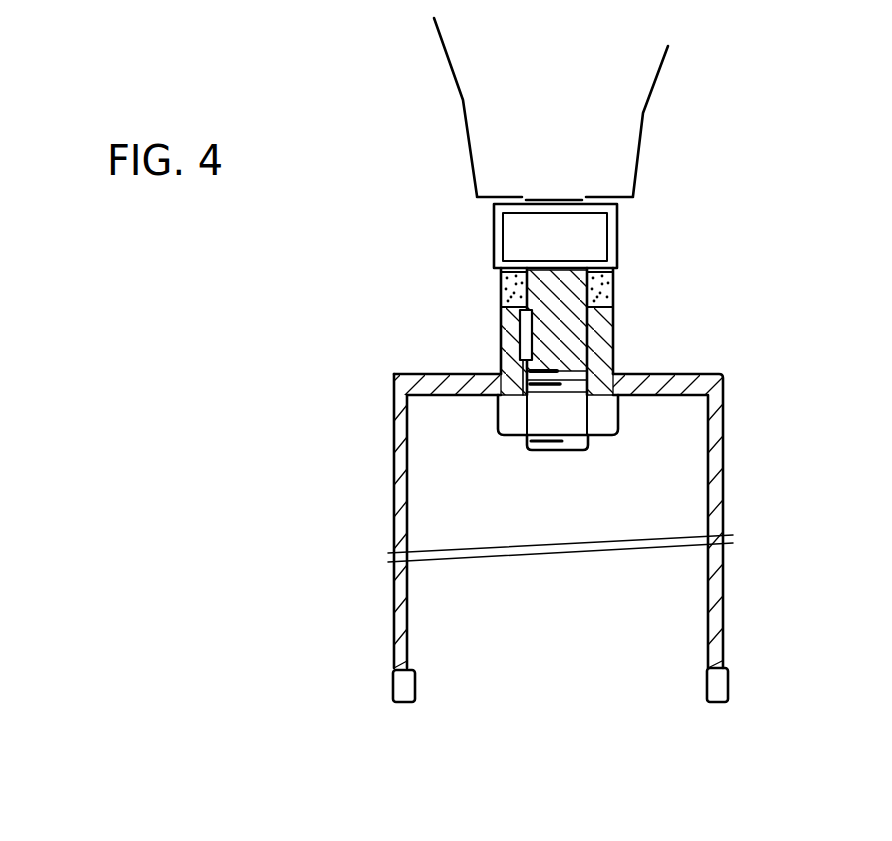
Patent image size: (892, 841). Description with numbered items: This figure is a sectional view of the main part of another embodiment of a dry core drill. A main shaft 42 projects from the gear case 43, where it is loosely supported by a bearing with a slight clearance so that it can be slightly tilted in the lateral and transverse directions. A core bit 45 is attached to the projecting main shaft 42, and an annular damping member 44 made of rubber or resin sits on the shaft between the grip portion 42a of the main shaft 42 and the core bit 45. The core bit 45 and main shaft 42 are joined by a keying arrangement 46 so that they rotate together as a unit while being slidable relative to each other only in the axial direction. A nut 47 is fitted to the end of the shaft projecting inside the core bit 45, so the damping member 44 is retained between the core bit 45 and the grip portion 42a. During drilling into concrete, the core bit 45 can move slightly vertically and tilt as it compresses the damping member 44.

The gear case 43 is at (633, 130).
The grip portion 42a is at (607, 236).
The annular damping member 44 is at (603, 290).
The main shaft 42 is at (577, 345).
The keying arrangement 46 is at (520, 328).
The core bit 45 is at (722, 450).
The nut 47 is at (607, 425).